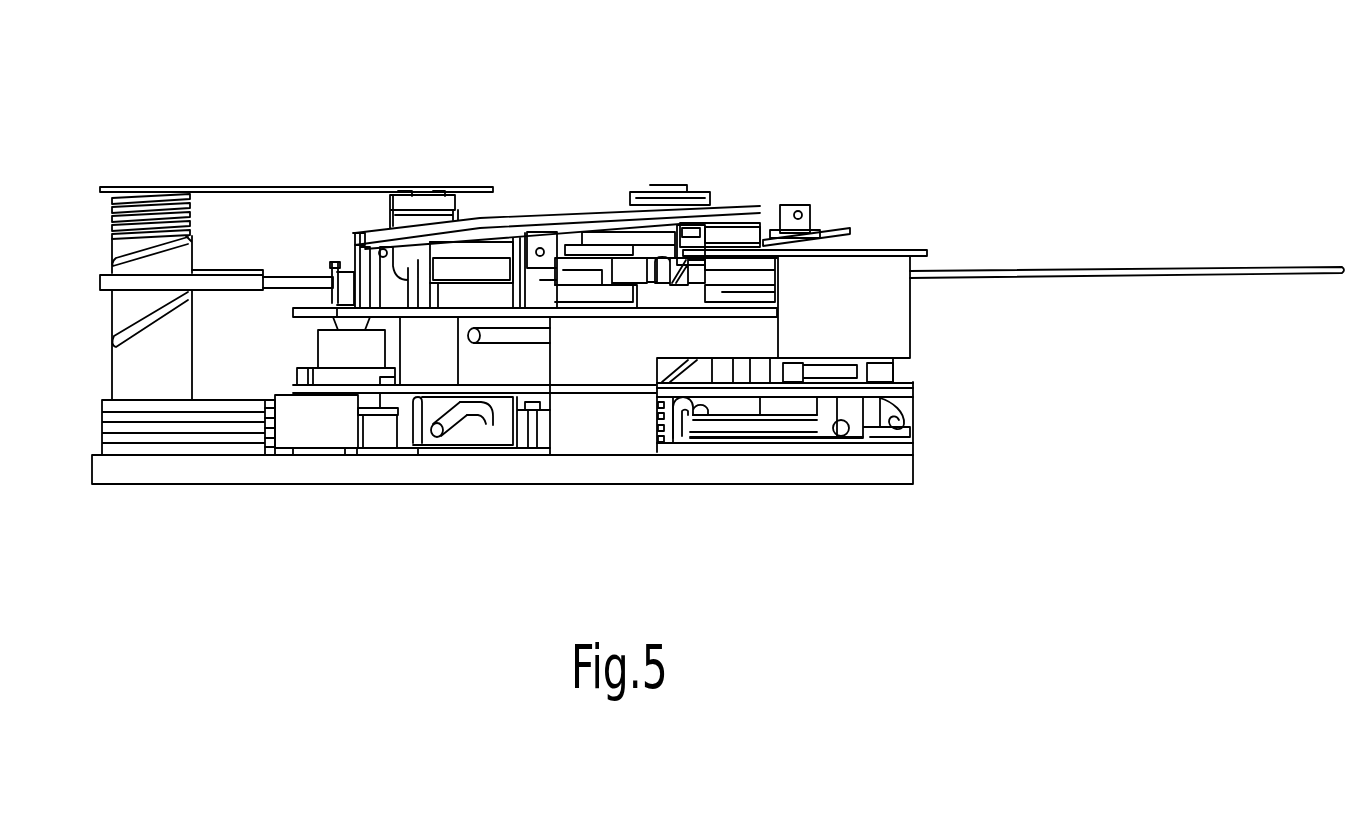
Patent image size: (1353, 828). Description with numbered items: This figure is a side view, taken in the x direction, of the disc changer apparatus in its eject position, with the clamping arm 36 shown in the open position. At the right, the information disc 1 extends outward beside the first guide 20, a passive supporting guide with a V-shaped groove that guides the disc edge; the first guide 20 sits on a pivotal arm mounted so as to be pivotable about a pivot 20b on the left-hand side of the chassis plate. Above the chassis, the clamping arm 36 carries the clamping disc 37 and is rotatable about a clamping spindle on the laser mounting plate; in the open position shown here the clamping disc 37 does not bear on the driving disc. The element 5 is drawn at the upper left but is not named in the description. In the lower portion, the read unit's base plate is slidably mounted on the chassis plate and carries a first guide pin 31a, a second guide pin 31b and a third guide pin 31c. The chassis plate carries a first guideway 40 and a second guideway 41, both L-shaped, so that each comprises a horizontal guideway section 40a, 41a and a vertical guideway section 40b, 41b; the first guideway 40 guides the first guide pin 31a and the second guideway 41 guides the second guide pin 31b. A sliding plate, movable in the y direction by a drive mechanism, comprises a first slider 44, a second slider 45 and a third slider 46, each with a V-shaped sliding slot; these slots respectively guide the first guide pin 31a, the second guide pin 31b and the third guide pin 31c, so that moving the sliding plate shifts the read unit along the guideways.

The information disc 1 is at (1138, 272).
The spring 5 is at (143, 233).
The first guide 20 is at (900, 312).
The pivot 20b is at (531, 420).
The first guide pin 31a is at (899, 478).
The second guide pin 31b is at (842, 432).
The third guide pin 31c is at (417, 445).
The clamping arm 36 is at (552, 222).
The clamping disc 37 is at (880, 252).
The first guideway 40 is at (716, 486).
The horizontal guideway section 40a is at (776, 475).
The vertical guideway section 40b is at (638, 466).
The second guideway 41 is at (692, 440).
The horizontal guideway section 41a is at (752, 428).
The vertical guideway section 41b is at (683, 435).
The first slider 44 is at (963, 425).
The second slider 45 is at (908, 438).
The third slider 46 is at (468, 435).